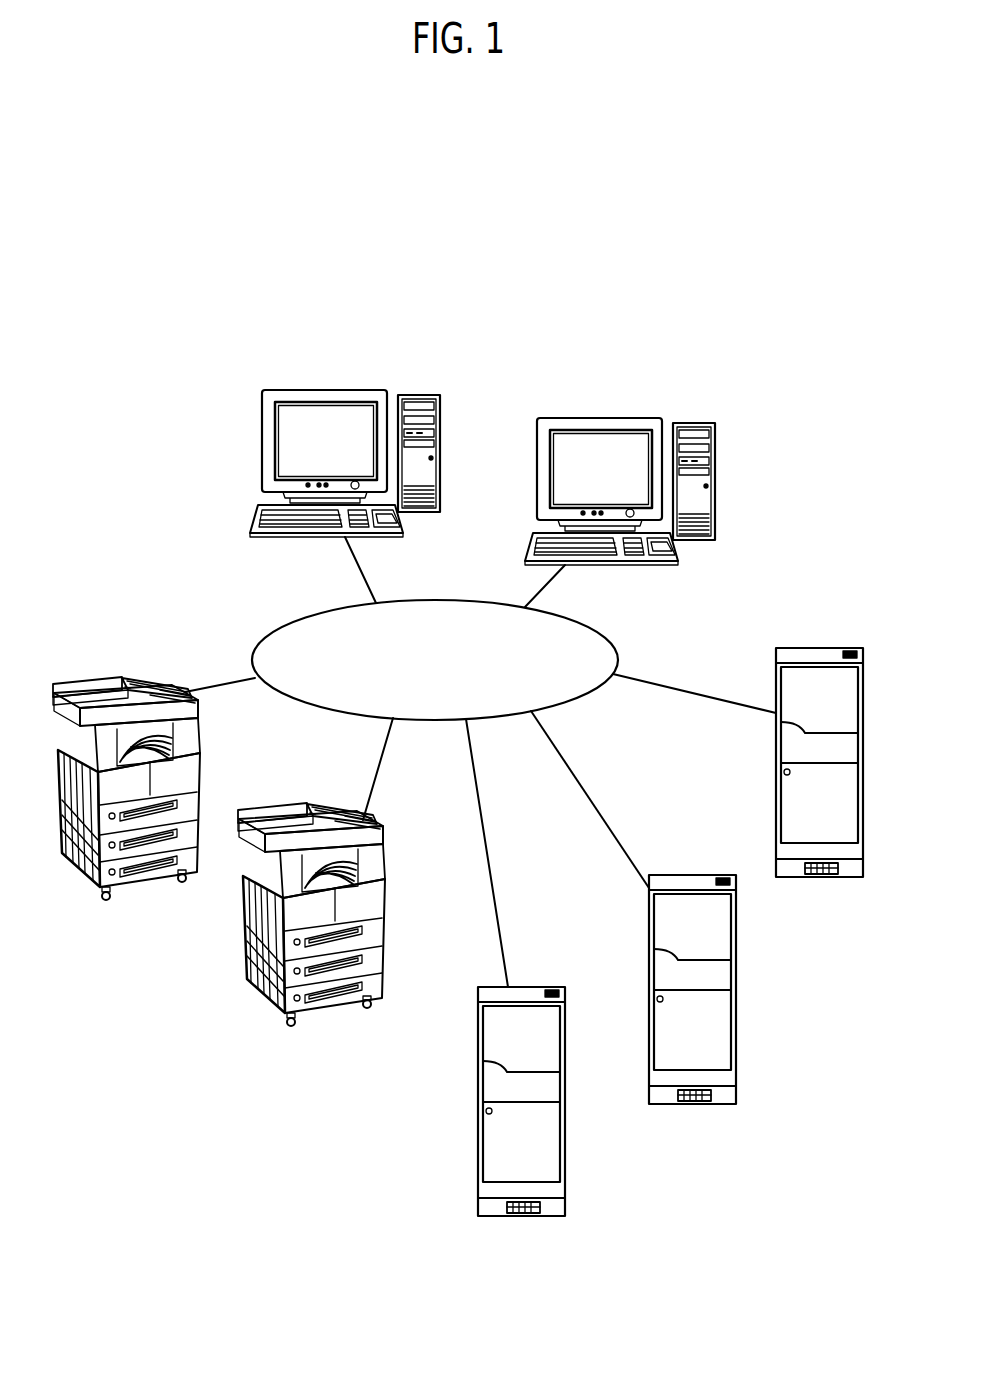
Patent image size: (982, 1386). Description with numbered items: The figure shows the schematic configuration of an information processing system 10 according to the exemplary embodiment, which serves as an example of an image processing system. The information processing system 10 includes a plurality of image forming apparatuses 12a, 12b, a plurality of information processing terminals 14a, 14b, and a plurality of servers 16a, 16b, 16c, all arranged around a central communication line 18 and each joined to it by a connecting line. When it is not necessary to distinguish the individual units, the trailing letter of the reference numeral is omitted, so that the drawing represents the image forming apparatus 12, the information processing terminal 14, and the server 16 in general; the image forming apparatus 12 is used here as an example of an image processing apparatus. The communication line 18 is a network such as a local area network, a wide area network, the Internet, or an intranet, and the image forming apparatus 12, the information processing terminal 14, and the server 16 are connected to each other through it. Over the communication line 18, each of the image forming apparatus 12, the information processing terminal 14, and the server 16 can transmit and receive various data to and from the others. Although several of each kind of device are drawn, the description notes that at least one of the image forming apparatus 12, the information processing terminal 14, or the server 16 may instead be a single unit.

The information processing system 10 is at (550, 320).
The image forming apparatus 12 is at (219, 804).
The image forming apparatus 12a is at (117, 672).
The image forming apparatus 12b is at (257, 808).
The information processing terminal 14 is at (482, 436).
The information processing terminal 14a is at (327, 392).
The information processing terminal 14b is at (632, 420).
The server 16 is at (675, 891).
The server 16a is at (528, 998).
The server 16b is at (702, 887).
The server 16c is at (828, 658).
The communication line 18 is at (610, 642).